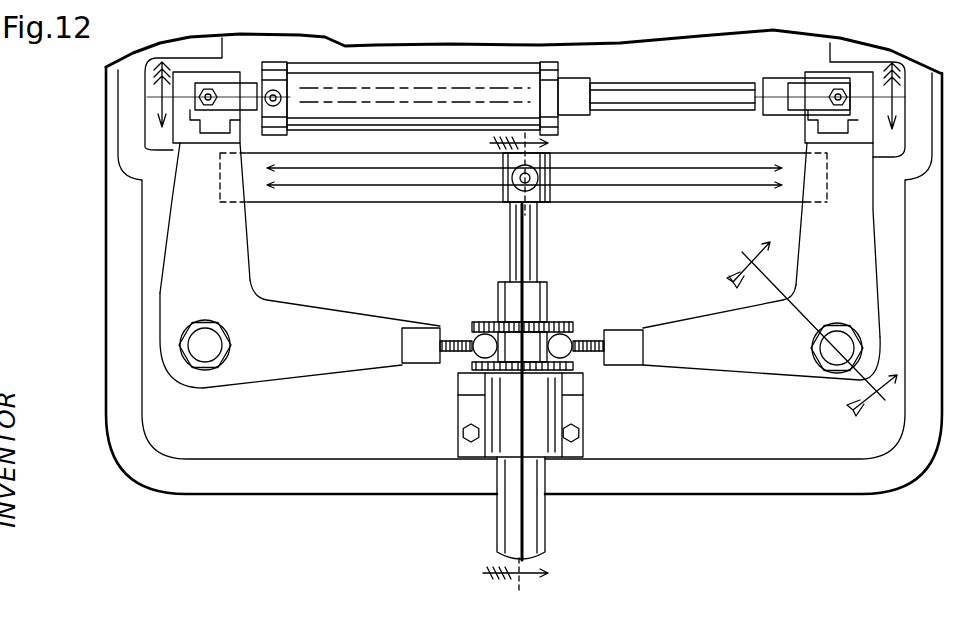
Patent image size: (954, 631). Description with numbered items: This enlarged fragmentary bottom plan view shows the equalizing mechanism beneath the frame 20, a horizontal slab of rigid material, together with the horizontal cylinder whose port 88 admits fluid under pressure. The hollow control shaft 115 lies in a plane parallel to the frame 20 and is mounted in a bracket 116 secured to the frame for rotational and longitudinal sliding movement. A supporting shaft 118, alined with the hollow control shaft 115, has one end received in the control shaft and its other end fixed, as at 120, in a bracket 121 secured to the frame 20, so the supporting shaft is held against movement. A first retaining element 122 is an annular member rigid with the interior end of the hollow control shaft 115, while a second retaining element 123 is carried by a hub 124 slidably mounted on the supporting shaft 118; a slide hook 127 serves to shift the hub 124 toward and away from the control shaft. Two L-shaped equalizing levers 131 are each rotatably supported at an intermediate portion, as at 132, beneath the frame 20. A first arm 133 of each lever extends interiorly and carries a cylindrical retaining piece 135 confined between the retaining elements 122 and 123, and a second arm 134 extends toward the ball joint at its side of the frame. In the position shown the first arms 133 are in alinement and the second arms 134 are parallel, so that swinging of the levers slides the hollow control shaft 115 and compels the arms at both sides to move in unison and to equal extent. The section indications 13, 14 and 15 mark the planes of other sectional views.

The section line 13- 13 is at (528, 95).
The section line 14- 14 is at (497, 362).
The section line 15- 15 is at (726, 285).
The frame 20 is at (362, 440).
The port 88 is at (256, 8).
The hollow control shaft 115 is at (543, 520).
The bracket 116 is at (572, 412).
The supporting shaft 118 is at (530, 272).
The fixing of the supporting shaft 120 is at (518, 181).
The bracket 121 is at (633, 200).
The first retaining element 122 is at (577, 367).
The second retaining element 123 is at (556, 327).
The hub 124 is at (543, 296).
The slide hook 127 is at (520, 520).
The equalizing lever 131 is at (246, 309).
The rotatable support 132 is at (213, 346).
The first arm 133 is at (352, 375).
The second arm 134 is at (237, 242).
The cylindrical retaining piece 135 is at (484, 350).